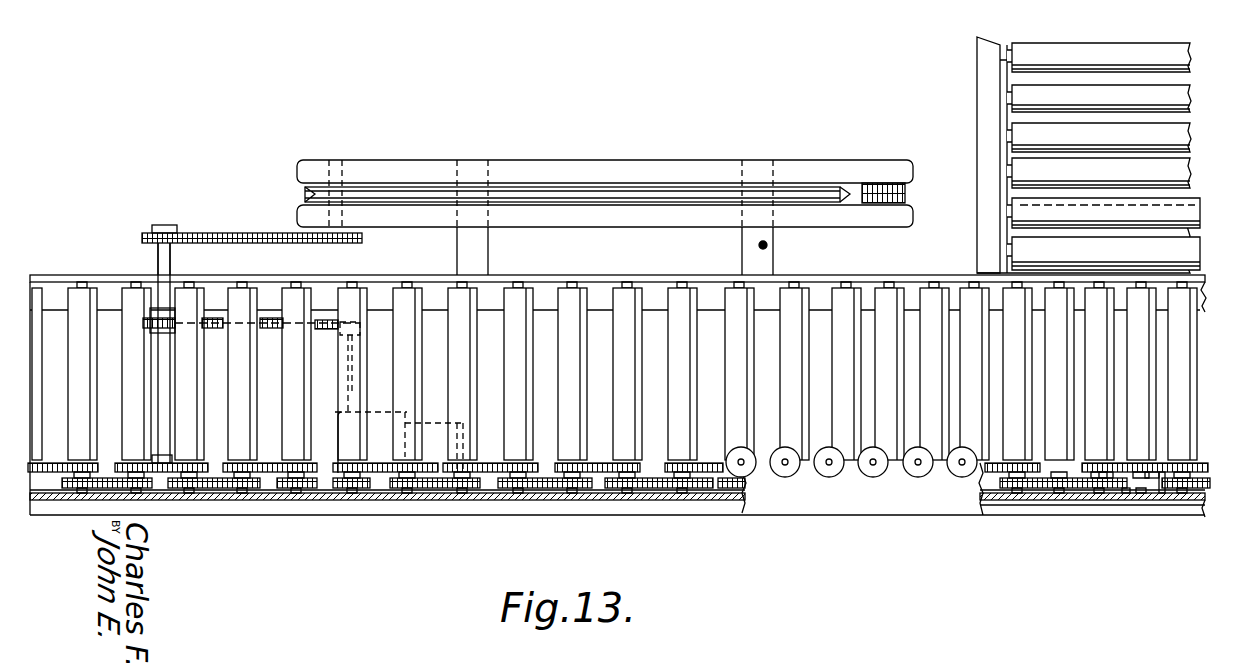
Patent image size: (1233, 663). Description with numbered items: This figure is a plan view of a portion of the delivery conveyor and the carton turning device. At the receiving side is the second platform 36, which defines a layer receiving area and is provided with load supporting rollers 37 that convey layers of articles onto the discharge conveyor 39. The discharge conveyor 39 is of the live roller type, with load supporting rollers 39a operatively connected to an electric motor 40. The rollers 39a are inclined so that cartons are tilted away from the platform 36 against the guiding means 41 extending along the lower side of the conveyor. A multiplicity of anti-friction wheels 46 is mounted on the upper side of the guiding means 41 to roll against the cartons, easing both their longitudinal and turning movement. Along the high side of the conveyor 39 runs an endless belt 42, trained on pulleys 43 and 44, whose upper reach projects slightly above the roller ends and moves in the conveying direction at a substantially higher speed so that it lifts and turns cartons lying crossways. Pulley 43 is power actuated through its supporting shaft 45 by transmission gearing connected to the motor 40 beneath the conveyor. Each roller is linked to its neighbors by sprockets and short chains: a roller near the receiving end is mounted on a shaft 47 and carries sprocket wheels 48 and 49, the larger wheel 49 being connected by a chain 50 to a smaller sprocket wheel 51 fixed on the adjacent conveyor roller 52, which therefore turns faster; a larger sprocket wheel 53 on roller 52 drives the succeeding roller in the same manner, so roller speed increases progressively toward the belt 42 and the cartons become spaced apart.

The second platform 36 is at (976, 80).
The load supporting rollers 37 is at (1025, 167).
The discharge conveyor 39 is at (660, 450).
The conveyor rollers 39a is at (138, 296).
The electric motor 40 is at (432, 490).
The guiding means 41 is at (737, 513).
The endless belt 42 is at (575, 195).
The pulley 43 is at (360, 186).
The pulley 44 is at (842, 183).
The supporting shaft 45 is at (330, 212).
The anti-friction wheels 46 is at (918, 474).
The shaft 47 is at (1178, 505).
The sprocket wheel 48 is at (1162, 487).
The sprocket wheel 49 is at (1196, 465).
The chain 50 is at (1152, 478).
The sprocket wheel 51 is at (1105, 470).
The conveyor roller 52 is at (1087, 488).
The sprocket wheel 53 is at (1127, 489).